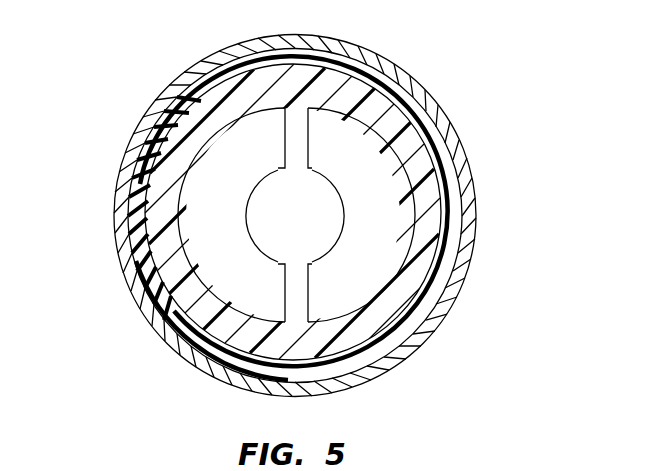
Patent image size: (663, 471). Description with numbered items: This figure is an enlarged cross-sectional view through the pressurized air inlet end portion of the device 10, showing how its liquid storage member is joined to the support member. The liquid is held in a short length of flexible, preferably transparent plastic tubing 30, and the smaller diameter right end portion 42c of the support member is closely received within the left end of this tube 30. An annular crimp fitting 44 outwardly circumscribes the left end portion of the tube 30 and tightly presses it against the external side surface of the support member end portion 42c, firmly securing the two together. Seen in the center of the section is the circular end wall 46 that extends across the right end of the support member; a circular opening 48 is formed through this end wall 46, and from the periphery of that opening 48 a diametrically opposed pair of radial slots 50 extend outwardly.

The device 10 is at (480, 131).
The tube 30 is at (124, 196).
The smaller diameter right end portion of the support member 42c is at (124, 243).
The annular crimp fitting 44 is at (150, 115).
The circular end wall 46 is at (357, 155).
The circular opening 48 is at (346, 226).
The radial slots 50 is at (286, 142).